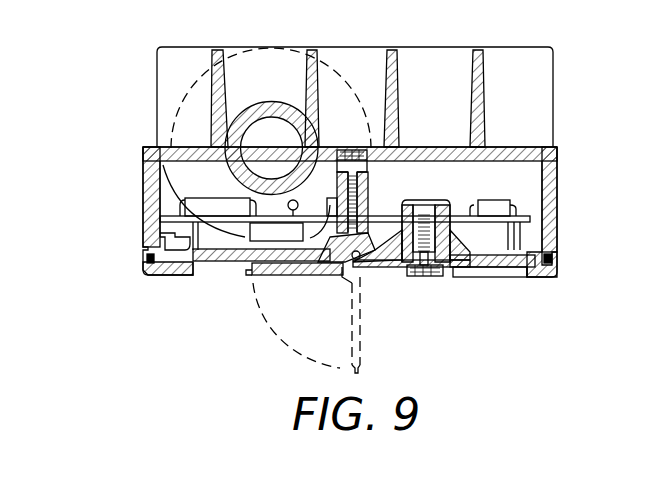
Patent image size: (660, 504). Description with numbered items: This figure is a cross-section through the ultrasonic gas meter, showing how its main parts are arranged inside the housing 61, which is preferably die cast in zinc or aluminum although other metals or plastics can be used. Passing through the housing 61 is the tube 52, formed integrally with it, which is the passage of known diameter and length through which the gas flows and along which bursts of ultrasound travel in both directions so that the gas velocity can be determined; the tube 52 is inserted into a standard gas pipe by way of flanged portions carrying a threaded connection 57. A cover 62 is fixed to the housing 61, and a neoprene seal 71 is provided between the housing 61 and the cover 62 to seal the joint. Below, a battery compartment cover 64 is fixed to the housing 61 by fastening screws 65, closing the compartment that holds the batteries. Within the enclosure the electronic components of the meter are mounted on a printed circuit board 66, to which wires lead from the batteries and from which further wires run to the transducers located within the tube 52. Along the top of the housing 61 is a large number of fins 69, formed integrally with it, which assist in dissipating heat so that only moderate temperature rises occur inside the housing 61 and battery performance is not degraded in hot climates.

The tube 52 is at (250, 95).
The threaded connection 57 is at (187, 90).
The housing 61 is at (142, 182).
The cover 62 is at (147, 262).
The battery compartment cover 64 is at (480, 275).
The fastening screws 65 is at (418, 277).
The printed circuit board 66 is at (523, 210).
The fins 69 is at (395, 78).
The neoprene seal 71 is at (553, 258).